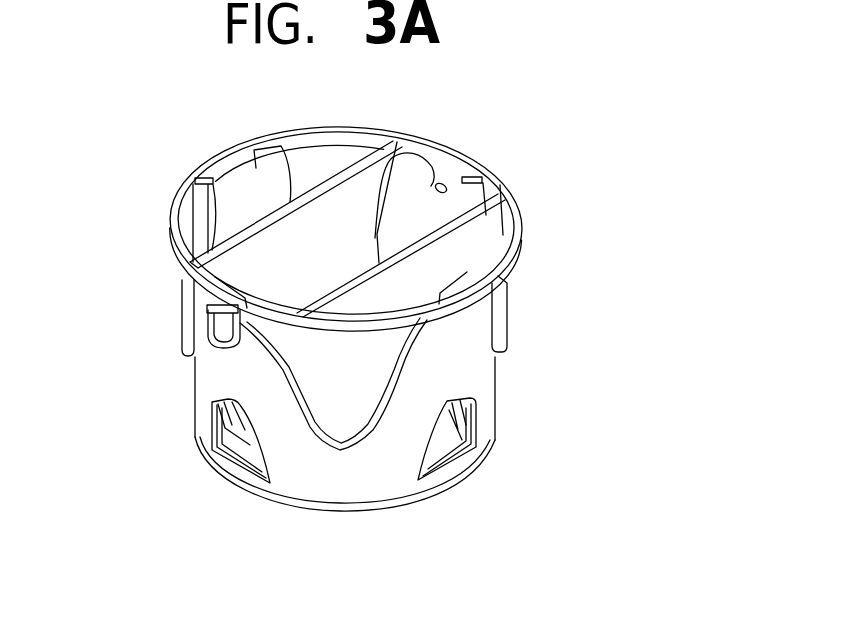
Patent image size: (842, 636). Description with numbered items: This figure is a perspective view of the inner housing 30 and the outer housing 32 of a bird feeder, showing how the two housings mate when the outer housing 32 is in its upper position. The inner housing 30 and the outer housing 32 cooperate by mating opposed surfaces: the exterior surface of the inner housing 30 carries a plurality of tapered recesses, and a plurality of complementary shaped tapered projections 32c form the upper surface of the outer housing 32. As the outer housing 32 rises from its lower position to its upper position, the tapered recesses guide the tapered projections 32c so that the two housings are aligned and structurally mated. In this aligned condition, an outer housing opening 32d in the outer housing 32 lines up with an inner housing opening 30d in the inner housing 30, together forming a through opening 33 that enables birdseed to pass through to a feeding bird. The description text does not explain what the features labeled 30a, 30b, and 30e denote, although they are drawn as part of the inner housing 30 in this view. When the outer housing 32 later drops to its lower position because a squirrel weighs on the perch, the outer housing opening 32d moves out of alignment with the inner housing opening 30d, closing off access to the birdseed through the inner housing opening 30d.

The inner housing 30 is at (414, 122).
The partition walls 30a is at (323, 203).
The pole 30b is at (428, 178).
The inner housing opening 30d is at (224, 455).
The latch 30e is at (213, 325).
The outer housing 32 is at (386, 478).
The tapered projections 32c is at (220, 375).
The outer housing opening 32d is at (214, 433).
The through opening 33 is at (280, 456).